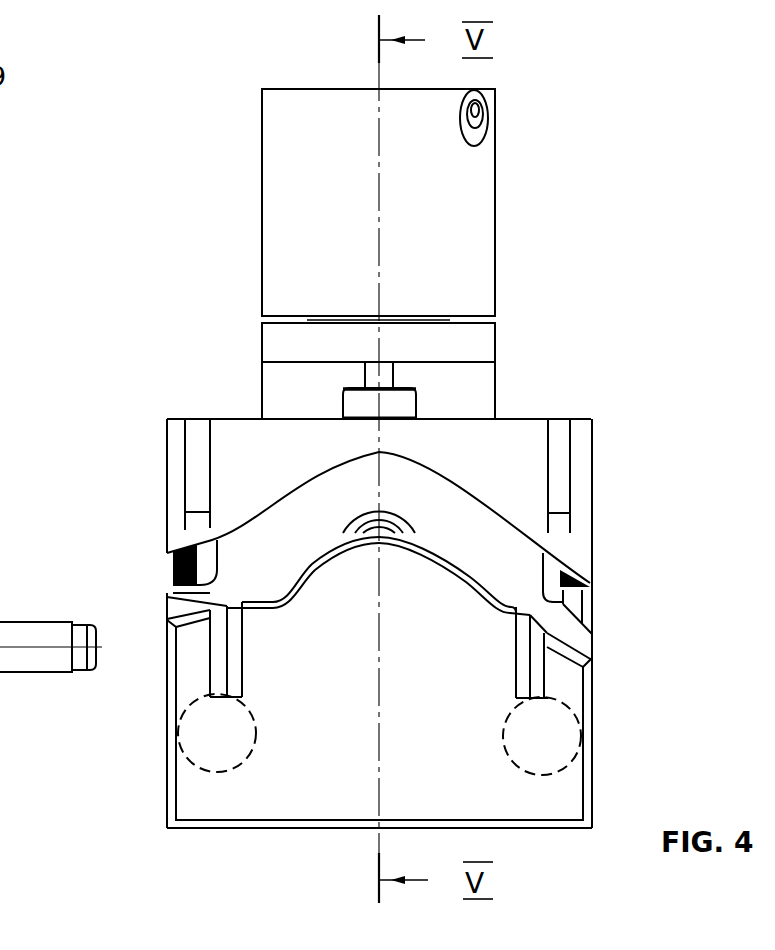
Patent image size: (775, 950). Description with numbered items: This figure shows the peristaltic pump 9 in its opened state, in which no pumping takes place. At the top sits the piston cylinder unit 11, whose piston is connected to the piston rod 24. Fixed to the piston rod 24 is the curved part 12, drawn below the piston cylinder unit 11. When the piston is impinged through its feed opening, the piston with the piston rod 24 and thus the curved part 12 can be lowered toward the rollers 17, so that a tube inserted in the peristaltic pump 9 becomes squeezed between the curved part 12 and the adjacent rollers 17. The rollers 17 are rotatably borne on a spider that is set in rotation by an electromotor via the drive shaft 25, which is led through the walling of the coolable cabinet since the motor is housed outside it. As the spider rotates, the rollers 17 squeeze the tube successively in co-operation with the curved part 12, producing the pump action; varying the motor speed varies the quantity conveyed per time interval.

The peristaltic pump 9 is at (221, 230).
The piston cylinder unit 11 is at (497, 205).
The curved part 12 is at (514, 452).
The rollers 17 is at (398, 521).
The piston rod 24 is at (372, 371).
The drive shaft 25 is at (51, 625).